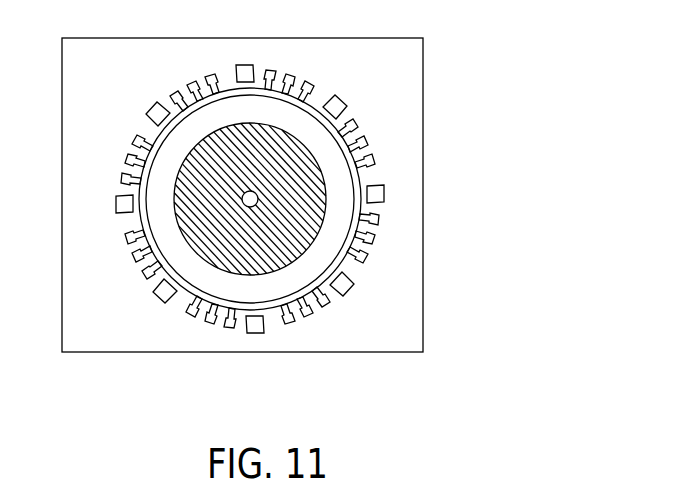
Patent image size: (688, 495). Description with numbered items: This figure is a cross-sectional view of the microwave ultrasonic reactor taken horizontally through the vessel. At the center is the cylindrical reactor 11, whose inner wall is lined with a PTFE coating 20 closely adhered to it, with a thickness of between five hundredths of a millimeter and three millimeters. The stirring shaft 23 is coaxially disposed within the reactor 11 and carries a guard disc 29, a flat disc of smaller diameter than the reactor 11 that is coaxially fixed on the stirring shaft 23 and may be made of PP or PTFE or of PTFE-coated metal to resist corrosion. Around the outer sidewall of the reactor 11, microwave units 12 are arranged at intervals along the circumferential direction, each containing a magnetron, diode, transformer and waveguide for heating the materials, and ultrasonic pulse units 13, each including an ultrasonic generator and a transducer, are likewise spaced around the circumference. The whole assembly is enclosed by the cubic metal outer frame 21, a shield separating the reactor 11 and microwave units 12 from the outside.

The reactor 11 is at (365, 200).
The microwave unit 12 is at (383, 187).
The ultrasonic pulse unit 13 is at (488, 27).
The PTFE coating 20 is at (340, 267).
The outer frame 21 is at (423, 122).
The stirring shaft 23 is at (251, 207).
The guard disc 29 is at (256, 211).